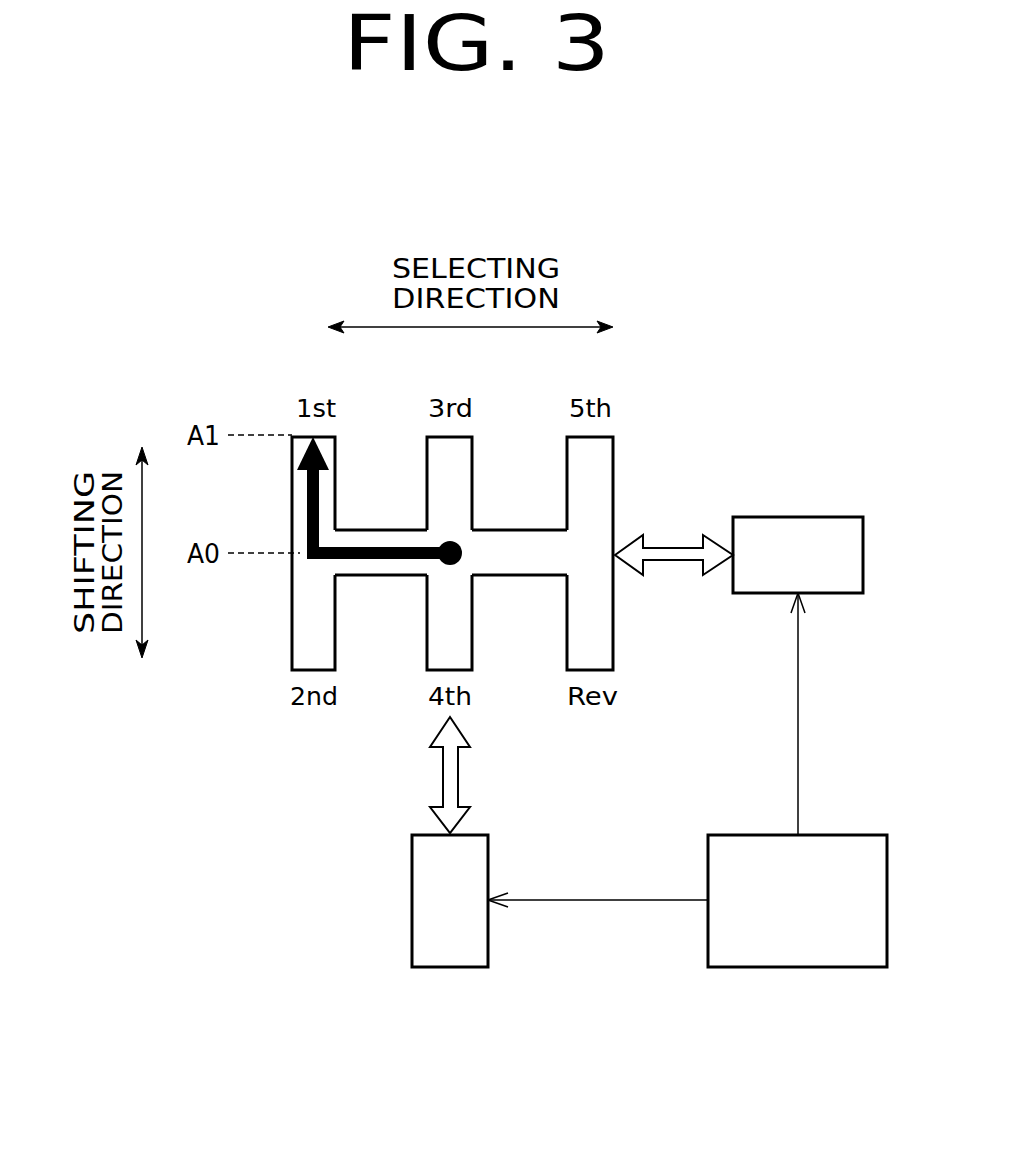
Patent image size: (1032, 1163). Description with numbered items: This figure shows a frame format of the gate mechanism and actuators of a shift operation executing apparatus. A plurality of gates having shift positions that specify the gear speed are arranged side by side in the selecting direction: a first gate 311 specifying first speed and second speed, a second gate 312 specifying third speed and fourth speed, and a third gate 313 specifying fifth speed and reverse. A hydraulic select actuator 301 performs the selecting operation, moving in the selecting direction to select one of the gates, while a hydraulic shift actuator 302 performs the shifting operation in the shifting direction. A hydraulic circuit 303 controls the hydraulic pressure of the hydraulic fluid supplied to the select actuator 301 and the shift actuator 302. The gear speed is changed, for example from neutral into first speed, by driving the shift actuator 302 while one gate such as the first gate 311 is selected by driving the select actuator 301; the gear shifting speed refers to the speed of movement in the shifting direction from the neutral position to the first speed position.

The hydraulic select actuator 301 is at (807, 517).
The hydraulic shift actuator 302 is at (490, 872).
The hydraulic circuit 303 is at (838, 835).
The first gate 311 is at (298, 630).
The second gate 312 is at (460, 640).
The third gate 313 is at (592, 632).